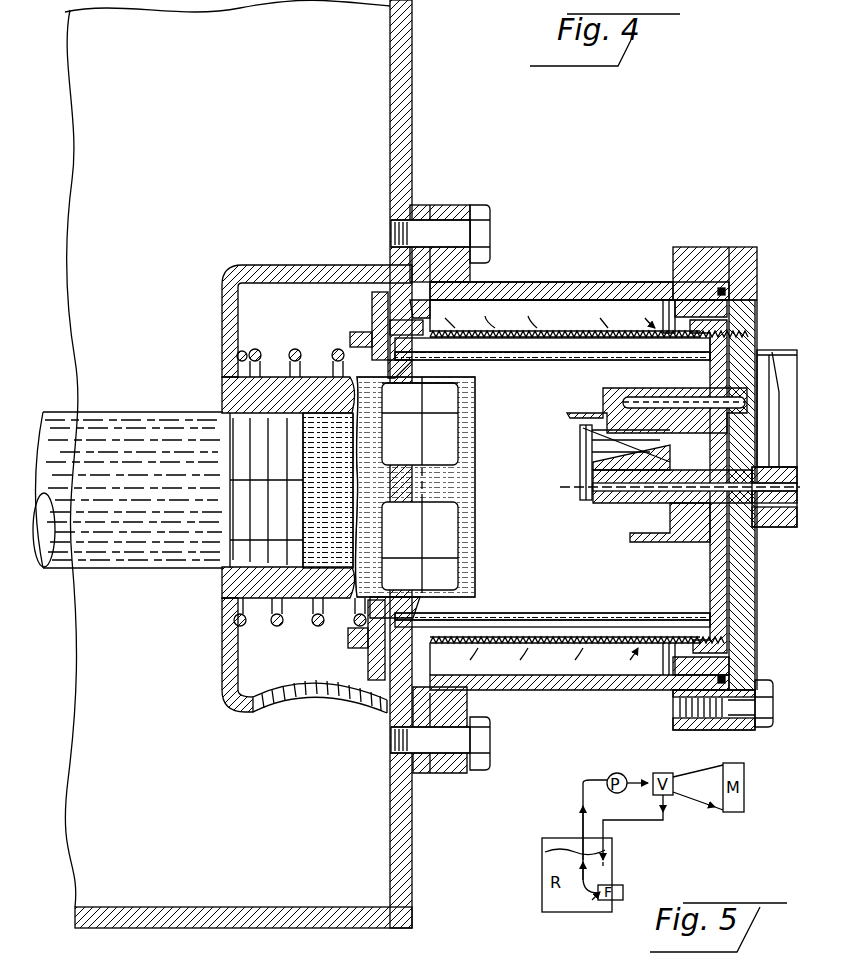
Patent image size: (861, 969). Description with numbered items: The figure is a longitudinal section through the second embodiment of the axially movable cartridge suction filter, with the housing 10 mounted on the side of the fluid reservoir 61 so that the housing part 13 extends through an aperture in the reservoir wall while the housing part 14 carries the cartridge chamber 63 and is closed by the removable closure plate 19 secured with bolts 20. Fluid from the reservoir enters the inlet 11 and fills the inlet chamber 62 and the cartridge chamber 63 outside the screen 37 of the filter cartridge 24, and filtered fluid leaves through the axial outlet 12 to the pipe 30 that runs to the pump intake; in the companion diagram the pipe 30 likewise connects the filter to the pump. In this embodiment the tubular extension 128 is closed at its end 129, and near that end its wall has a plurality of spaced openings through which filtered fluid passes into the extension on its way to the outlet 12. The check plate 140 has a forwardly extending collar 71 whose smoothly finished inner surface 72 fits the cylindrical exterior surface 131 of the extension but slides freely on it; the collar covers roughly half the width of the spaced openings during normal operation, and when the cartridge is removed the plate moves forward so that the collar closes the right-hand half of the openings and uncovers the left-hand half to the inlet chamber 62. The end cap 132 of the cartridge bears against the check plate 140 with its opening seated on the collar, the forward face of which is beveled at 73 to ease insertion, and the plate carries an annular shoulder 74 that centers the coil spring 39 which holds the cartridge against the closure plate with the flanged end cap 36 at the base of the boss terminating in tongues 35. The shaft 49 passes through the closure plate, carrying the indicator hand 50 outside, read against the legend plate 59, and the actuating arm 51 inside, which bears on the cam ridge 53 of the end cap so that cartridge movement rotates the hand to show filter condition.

In FIG. 4, the housing 10 is at (510, 278).
In FIG. 4, the fluid inlet 11 is at (300, 725).
In FIG. 4, the outlet 12 is at (212, 412).
In FIG. 4, the housing part 13 is at (340, 280).
In FIG. 4, the housing part 14 is at (602, 284).
In FIG. 4, the closure plate 19 is at (758, 262).
In FIG. 4, the bolts 20 is at (773, 700).
In FIG. 4, the filter cartridge 24 is at (556, 330).
In FIG. 4, the pipe 30 is at (135, 412).
In FIG. 5, the pipe 30 is at (583, 820).
In FIG. 4, the tongues 35 is at (640, 537).
In FIG. 4, the flanged end cap 36 is at (712, 568).
In FIG. 4, the screen 37 is at (512, 332).
In FIG. 4, the coil spring 39 is at (258, 350).
In FIG. 4, the shaft 49 is at (752, 485).
In FIG. 4, the indicator hand 50 is at (780, 402).
In FIG. 4, the actuating arm 51 is at (580, 457).
In FIG. 4, the cam ridge 53 is at (568, 418).
In FIG. 4, the legend plate 59 is at (757, 302).
In FIG. 4, the fluid reservoir 61 is at (412, 78).
In FIG. 4, the inlet chamber 62 is at (285, 280).
In FIG. 4, the cartridge chamber 63 is at (545, 300).
In FIG. 4, the collar or shoe 71 is at (406, 380).
In FIG. 4, the inner surface 72 is at (410, 378).
In FIG. 4, the beveled end face 73 is at (420, 608).
In FIG. 4, the annular flange or shoulder 74 is at (347, 344).
In FIG. 4, the tubular extension 128 is at (297, 602).
In FIG. 4, the closed end 129 is at (474, 395).
In FIG. 4, the cylindrical exterior surface 131 is at (312, 365).
In FIG. 4, the end cap 132 is at (398, 344).
In FIG. 4, the check plate 140 is at (372, 298).